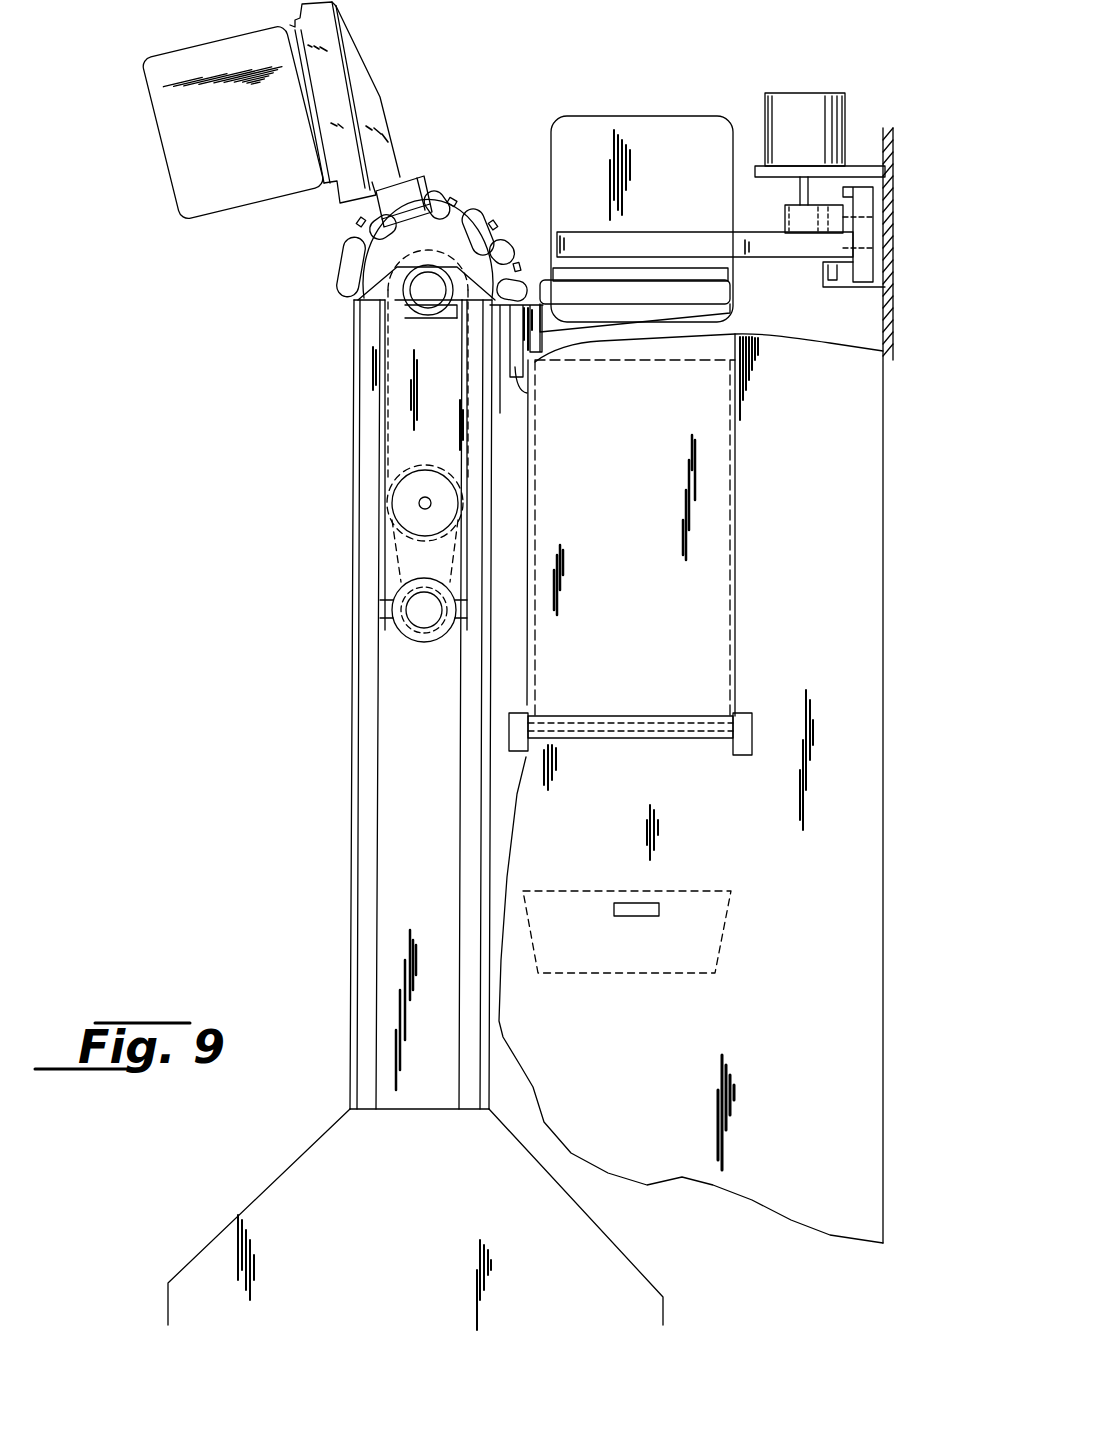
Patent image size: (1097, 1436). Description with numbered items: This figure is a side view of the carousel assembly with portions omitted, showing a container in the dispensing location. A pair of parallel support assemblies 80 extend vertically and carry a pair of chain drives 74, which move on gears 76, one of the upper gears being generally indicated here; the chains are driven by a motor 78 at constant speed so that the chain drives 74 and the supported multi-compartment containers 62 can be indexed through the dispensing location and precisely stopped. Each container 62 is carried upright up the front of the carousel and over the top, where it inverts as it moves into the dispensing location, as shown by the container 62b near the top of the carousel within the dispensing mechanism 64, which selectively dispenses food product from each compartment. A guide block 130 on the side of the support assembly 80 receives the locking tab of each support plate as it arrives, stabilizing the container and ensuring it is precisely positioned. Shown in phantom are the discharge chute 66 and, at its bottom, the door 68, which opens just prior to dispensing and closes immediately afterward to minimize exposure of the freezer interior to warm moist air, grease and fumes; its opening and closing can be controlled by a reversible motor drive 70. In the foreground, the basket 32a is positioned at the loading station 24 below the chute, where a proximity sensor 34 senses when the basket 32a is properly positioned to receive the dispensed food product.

The multi-compartment container 62 is at (197, 52).
The container in the dispensing location 62b is at (624, 120).
The dispensing mechanism 64 is at (811, 75).
The chain drive 74 is at (347, 278).
The gear 76 is at (382, 300).
The motor 78 is at (393, 632).
The support assembly 80 is at (362, 733).
The guide block 130 is at (527, 393).
The discharge chute 66 is at (648, 614).
The door 68 is at (636, 740).
The reversible motor drive 70 is at (752, 730).
The proximity sensor 34 is at (628, 903).
The basket 32a is at (690, 893).
The loading station 24 is at (640, 1023).